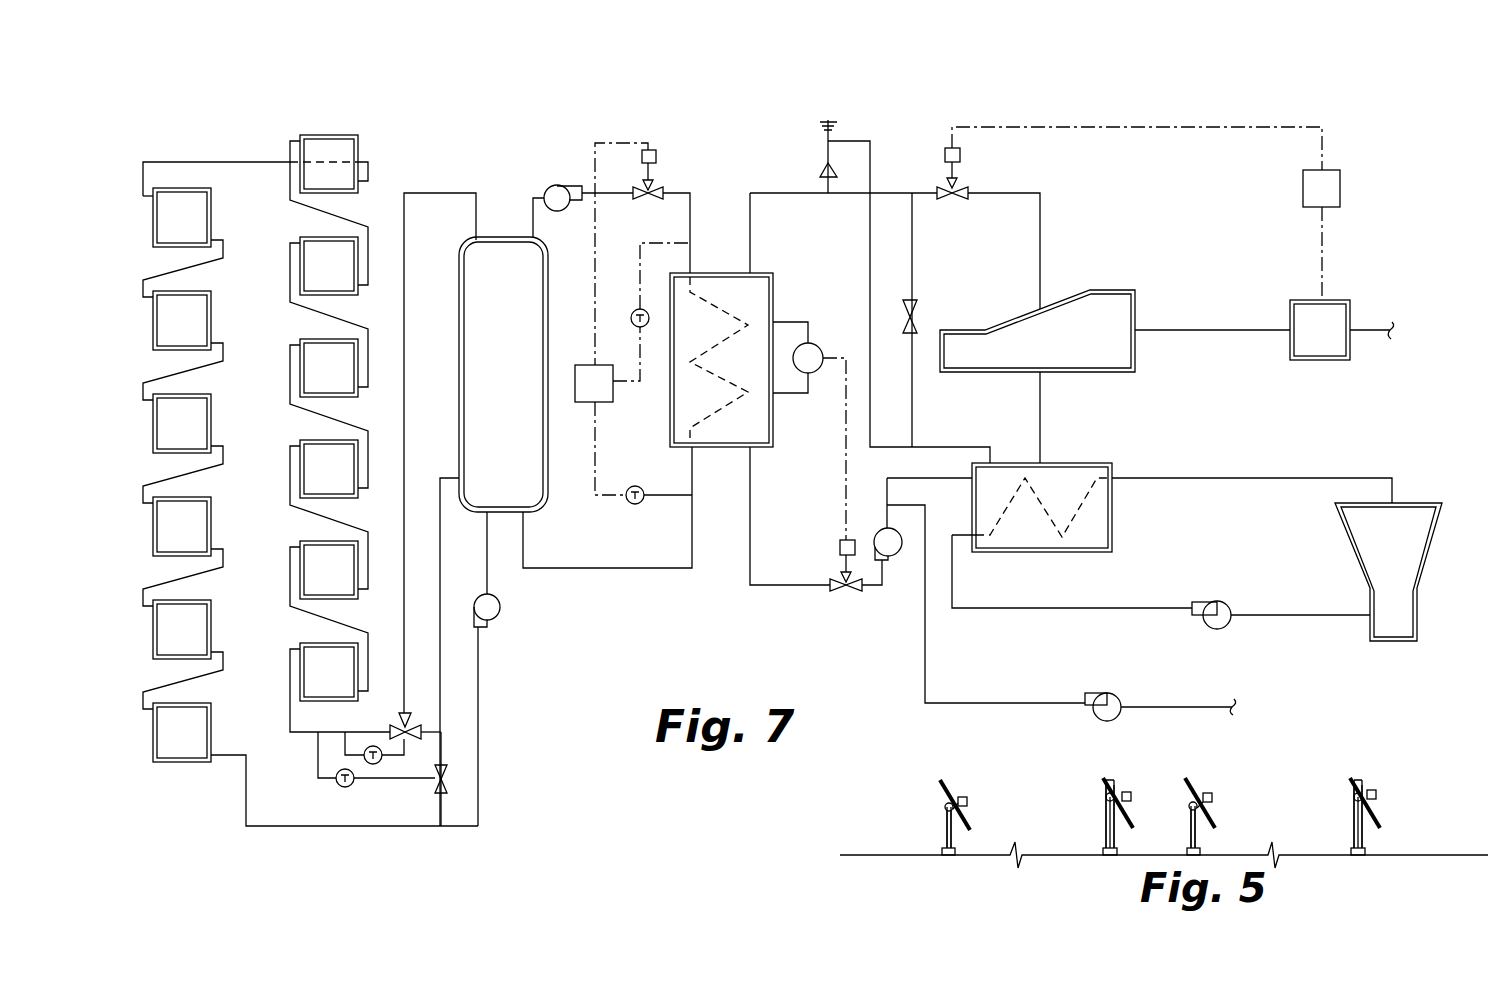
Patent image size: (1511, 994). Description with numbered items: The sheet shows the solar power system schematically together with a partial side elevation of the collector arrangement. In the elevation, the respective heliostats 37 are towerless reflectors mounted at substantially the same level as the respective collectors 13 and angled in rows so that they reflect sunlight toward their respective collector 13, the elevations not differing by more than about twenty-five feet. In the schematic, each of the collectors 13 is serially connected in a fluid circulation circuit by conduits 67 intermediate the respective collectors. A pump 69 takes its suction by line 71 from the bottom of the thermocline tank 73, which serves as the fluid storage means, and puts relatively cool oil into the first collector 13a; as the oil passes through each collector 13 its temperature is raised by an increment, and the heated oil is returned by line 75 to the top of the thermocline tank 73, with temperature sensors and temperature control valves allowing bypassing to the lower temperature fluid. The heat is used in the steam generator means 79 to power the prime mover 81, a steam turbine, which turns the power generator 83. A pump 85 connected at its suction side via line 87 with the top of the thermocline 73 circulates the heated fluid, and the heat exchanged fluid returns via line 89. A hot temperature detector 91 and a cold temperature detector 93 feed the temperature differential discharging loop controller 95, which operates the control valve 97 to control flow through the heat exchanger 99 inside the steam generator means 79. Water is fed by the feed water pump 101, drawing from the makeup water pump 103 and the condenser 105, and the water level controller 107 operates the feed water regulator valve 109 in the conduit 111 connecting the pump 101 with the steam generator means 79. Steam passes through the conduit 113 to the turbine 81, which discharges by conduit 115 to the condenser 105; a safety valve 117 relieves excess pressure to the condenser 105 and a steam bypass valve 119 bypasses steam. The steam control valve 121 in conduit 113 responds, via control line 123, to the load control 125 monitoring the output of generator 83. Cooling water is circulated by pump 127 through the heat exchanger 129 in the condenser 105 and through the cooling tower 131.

In FIG. 7, the collector 13 is at (335, 548).
In FIG. 5, the collector 13 is at (1118, 783).
In FIG. 7, the first collector 13a is at (190, 762).
In FIG. 5, the heliostat 37 is at (946, 815).
In FIG. 7, the conduit 67 is at (213, 677).
In FIG. 7, the pump 69 is at (500, 603).
In FIG. 7, the line 71 is at (487, 548).
In FIG. 7, the thermocline tank 73 is at (497, 372).
In FIG. 7, the line 75 is at (404, 300).
In FIG. 7, the steam generator means 79 is at (748, 372).
In FIG. 7, the prime mover 81 is at (1092, 349).
In FIG. 7, the power generator 83 is at (1337, 349).
In FIG. 7, the pump 85 is at (565, 185).
In FIG. 7, the line 87 is at (533, 205).
In FIG. 7, the line 89 is at (692, 555).
In FIG. 7, the hot temperature detector 91 is at (633, 312).
In FIG. 7, the cold temperature detector 93 is at (638, 487).
In FIG. 7, the temperature differential discharging loop controller 95 is at (598, 365).
In FIG. 7, the control valve 97 is at (652, 188).
In FIG. 7, the heat exchanger 99 is at (710, 300).
In FIG. 7, the feed water pump 101 is at (900, 548).
In FIG. 7, the makeup water pump 103 is at (1118, 695).
In FIG. 7, the condenser 105 is at (1050, 536).
In FIG. 7, the water level controller 107 is at (820, 355).
In FIG. 7, the feed water regulator valve 109 is at (840, 580).
In FIG. 7, the conduit 111 is at (750, 518).
In FIG. 7, the conduit 113 is at (925, 195).
In FIG. 7, the conduit 115 is at (1042, 410).
In FIG. 7, the safety valve 117 is at (822, 170).
In FIG. 7, the steam bypass valve 119 is at (917, 315).
In FIG. 7, the steam control valve 121 is at (958, 188).
In FIG. 7, the control line 123 is at (1105, 125).
In FIG. 7, the load control 125 is at (1335, 183).
In FIG. 7, the pump 127 is at (1222, 602).
In FIG. 7, the heat exchanger 129 is at (1085, 500).
In FIG. 7, the cooling tower 131 is at (1413, 540).